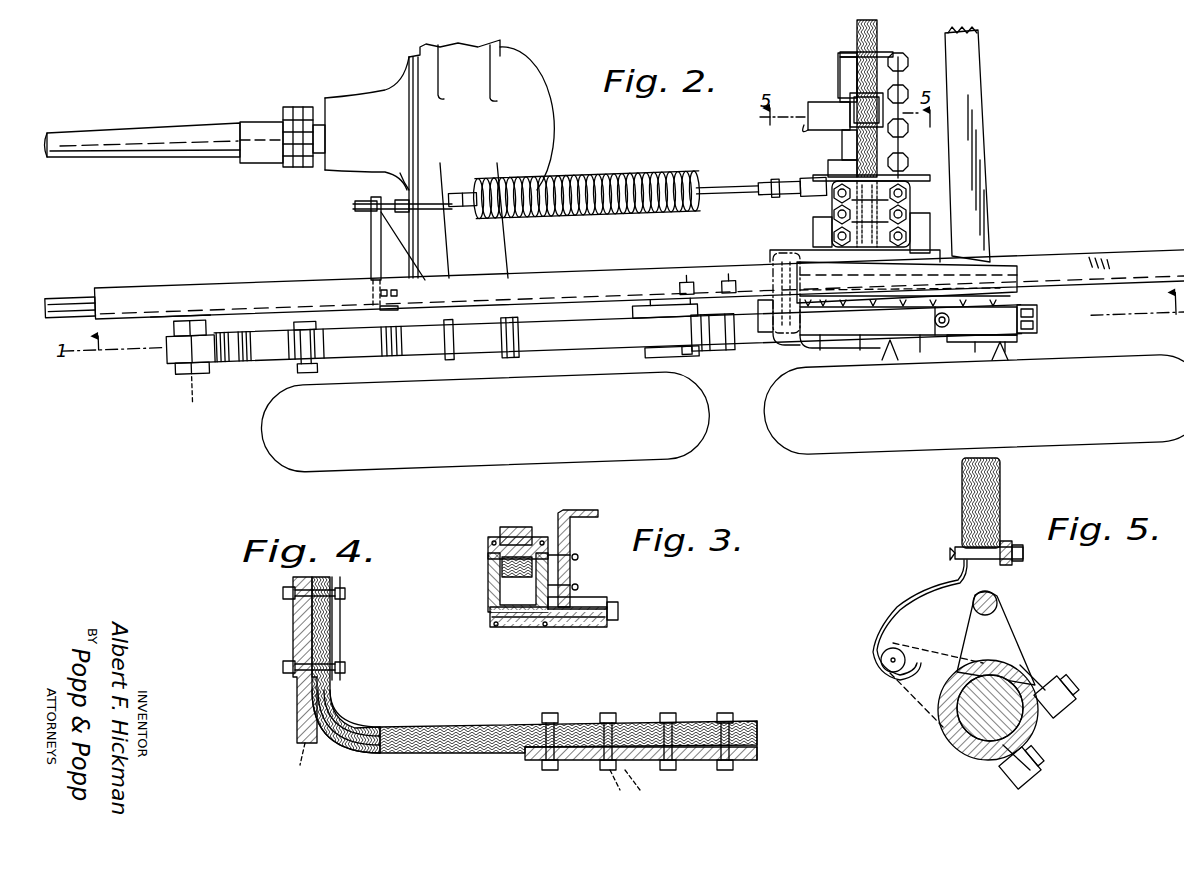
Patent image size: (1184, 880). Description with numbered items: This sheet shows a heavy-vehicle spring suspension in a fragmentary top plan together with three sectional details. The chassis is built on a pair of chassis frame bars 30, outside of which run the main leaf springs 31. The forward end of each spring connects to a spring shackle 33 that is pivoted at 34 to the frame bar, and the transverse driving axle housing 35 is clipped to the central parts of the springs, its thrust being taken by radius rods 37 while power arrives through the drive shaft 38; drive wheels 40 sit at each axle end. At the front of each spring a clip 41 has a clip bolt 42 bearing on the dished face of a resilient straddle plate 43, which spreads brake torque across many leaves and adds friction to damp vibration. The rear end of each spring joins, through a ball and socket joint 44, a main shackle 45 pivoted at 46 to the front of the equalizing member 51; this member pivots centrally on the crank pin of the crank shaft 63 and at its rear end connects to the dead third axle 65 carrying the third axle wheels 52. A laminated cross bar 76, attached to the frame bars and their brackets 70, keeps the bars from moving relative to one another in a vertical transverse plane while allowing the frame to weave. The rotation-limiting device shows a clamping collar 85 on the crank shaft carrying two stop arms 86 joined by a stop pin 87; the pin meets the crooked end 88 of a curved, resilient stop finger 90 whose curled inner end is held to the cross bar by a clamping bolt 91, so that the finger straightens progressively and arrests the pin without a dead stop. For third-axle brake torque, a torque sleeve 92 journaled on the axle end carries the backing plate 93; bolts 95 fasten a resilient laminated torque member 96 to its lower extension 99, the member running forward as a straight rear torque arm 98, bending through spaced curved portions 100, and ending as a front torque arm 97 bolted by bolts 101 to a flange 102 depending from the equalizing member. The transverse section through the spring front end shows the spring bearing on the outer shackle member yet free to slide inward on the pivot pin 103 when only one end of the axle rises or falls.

In FIG. 2, the chassis frame bar 30 is at (147, 288).
In FIG. 3, the chassis frame bar 30 is at (577, 514).
In FIG. 2, the main leaf spring 31 is at (590, 342).
In FIG. 3, the main leaf spring 31 is at (515, 527).
In FIG. 2, the spring shackle 33 is at (172, 326).
In FIG. 3, the spring shackle 33 is at (488, 592).
In FIG. 3, the pivot 34 is at (490, 615).
In FIG. 2, the driving axle housing 35 is at (485, 49).
In FIG. 2, the radius rod 37 is at (66, 296).
In FIG. 2, the drive shaft 38 is at (128, 131).
In FIG. 2, the drive wheel 40 is at (481, 462).
In FIG. 2, the clip 41 is at (314, 368).
In FIG. 2, the clip bolt 42 is at (300, 377).
In FIG. 2, the resilient straddle plate 43 is at (366, 357).
In FIG. 2, the ball and socket joint 44 is at (718, 355).
In FIG. 2, the main shackle 45 is at (682, 358).
In FIG. 2, the pivot 46 is at (640, 358).
In FIG. 2, the equalizing member 51 is at (765, 334).
In FIG. 4, the equalizing member 51 is at (298, 764).
In FIG. 2, the third axle wheel 52 is at (945, 451).
In FIG. 2, the crank shaft 63 is at (838, 45).
In FIG. 5, the crank shaft 63 is at (960, 740).
In FIG. 2, the third axle 65 is at (983, 50).
In FIG. 2, the bracket 70 is at (1019, 291).
In FIG. 2, the laminated cross bar 76 is at (855, 32).
In FIG. 5, the laminated cross bar 76 is at (1000, 503).
In FIG. 2, the clamping collar 85 is at (840, 63).
In FIG. 5, the clamping collar 85 is at (975, 752).
In FIG. 2, the stop arm 86 is at (840, 154).
In FIG. 5, the stop arm 86 is at (968, 645).
In FIG. 5, the stop pin 87 is at (973, 606).
In FIG. 2, the crooked end 88 is at (808, 124).
In FIG. 5, the crooked end 88 is at (882, 672).
In FIG. 2, the resilient stop finger 90 is at (826, 101).
In FIG. 5, the resilient stop finger 90 is at (930, 600).
In FIG. 2, the clamping bolt 91 is at (842, 140).
In FIG. 5, the clamping bolt 91 is at (1024, 553).
In FIG. 4, the torque sleeve 92 is at (635, 786).
In FIG. 4, the backing plate 93 is at (611, 786).
In FIG. 4, the bolts 95 is at (726, 770).
In FIG. 2, the resilient laminated torque member 96 is at (805, 349).
In FIG. 4, the resilient laminated torque member 96 is at (470, 757).
In FIG. 2, the front torque arm 97 is at (792, 258).
In FIG. 4, the front torque arm 97 is at (341, 632).
In FIG. 2, the rear torque arm 98 is at (922, 340).
In FIG. 4, the rear torque arm 98 is at (508, 728).
In FIG. 2, the lower extension 99 is at (1015, 338).
In FIG. 4, the lower extension 99 is at (758, 745).
In FIG. 2, the curved portion 100 is at (790, 350).
In FIG. 4, the curved portion 100 is at (360, 712).
In FIG. 4, the bolts 101 is at (283, 594).
In FIG. 4, the flange 102 is at (297, 717).
In FIG. 2, the pivot pin 103 is at (192, 395).
In FIG. 3, the pivot pin 103 is at (488, 550).